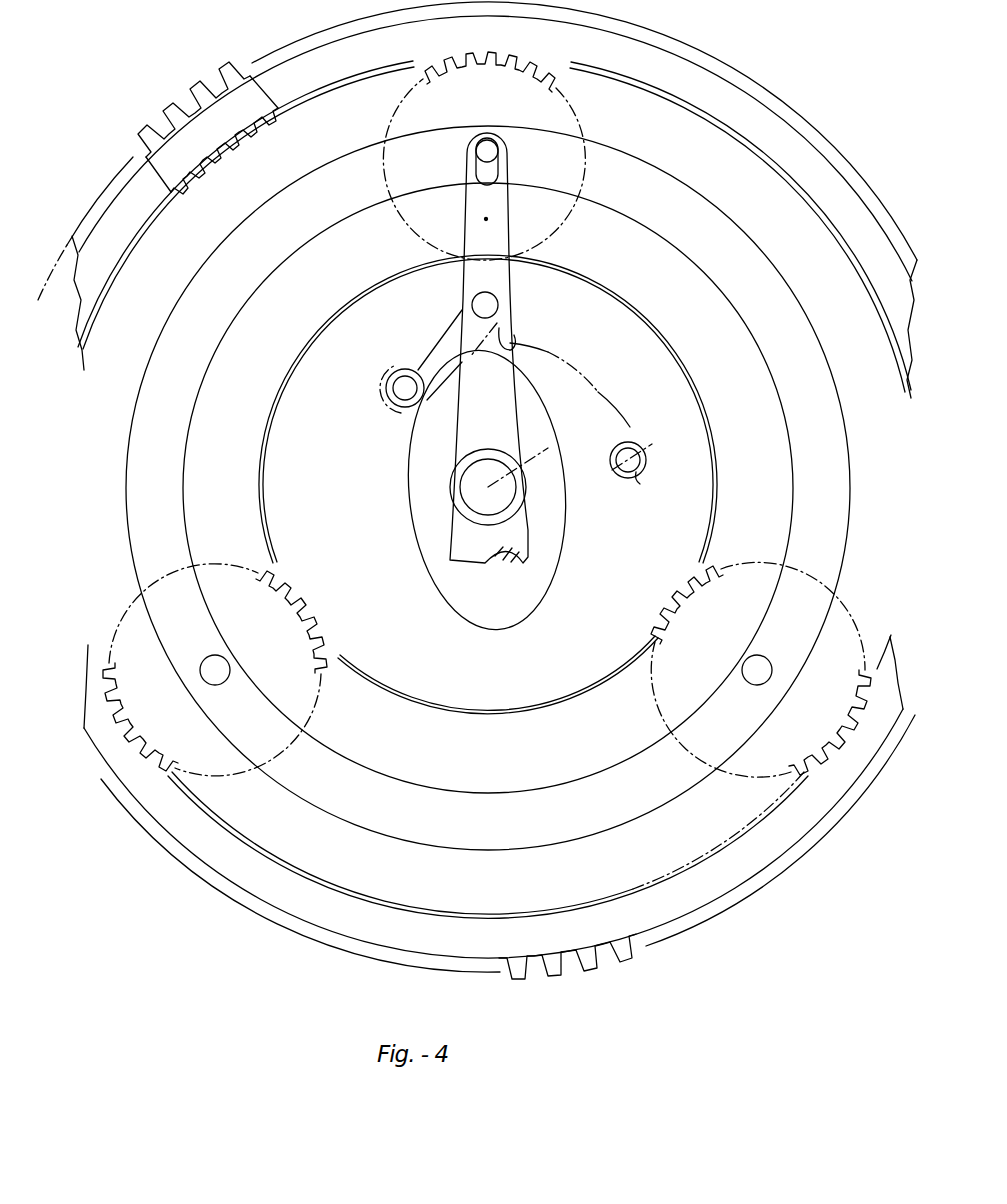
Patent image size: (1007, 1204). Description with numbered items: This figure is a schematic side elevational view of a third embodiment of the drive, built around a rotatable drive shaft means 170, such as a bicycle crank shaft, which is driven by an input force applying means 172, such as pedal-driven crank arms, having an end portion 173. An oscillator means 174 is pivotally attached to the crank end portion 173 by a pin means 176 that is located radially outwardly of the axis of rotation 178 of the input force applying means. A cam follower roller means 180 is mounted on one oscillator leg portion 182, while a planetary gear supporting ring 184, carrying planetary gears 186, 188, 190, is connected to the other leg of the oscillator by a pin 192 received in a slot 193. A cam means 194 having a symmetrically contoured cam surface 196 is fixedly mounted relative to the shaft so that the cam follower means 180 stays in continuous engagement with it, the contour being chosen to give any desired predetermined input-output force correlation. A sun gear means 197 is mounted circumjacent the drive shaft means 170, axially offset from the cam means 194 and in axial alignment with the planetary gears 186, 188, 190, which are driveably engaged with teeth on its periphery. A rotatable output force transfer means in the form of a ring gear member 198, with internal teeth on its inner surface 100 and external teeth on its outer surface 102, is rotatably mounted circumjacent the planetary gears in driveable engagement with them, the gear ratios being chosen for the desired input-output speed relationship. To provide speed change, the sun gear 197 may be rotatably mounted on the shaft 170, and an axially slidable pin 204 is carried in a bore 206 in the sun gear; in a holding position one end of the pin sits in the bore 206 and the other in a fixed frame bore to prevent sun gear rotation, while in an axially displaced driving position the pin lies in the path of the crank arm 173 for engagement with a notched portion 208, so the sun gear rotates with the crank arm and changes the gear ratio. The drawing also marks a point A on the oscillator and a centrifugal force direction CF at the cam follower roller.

The toothed band segment 100 is at (760, 152).
The outer band 102 is at (687, 56).
The rotatable drive shaft means 170 is at (507, 495).
The input force applying means 172 is at (528, 535).
The end portion 173 is at (490, 423).
The oscillator means 174 is at (462, 310).
The pin means 176 is at (485, 305).
The axis of rotation 178 is at (545, 448).
The cam follower roller means 180 is at (390, 411).
The oscillator leg portion 182 is at (428, 370).
The planetary gear supporting ring 184 is at (668, 153).
The planetary gear 186 is at (410, 105).
The planetary gear 188 is at (208, 743).
The planetary gear 190 is at (816, 745).
The pin 192 is at (492, 146).
The slot 193 is at (497, 177).
The cam means 194 is at (433, 572).
The cam surface 196 is at (410, 520).
The sun gear means 197 is at (262, 468).
The ring gear member 198 is at (390, 938).
The axially slidable pin 204 is at (648, 446).
The bore 206 is at (640, 484).
The notched portion 208 is at (495, 324).
The point A is at (512, 338).
The centrifugal force CF is at (392, 395).